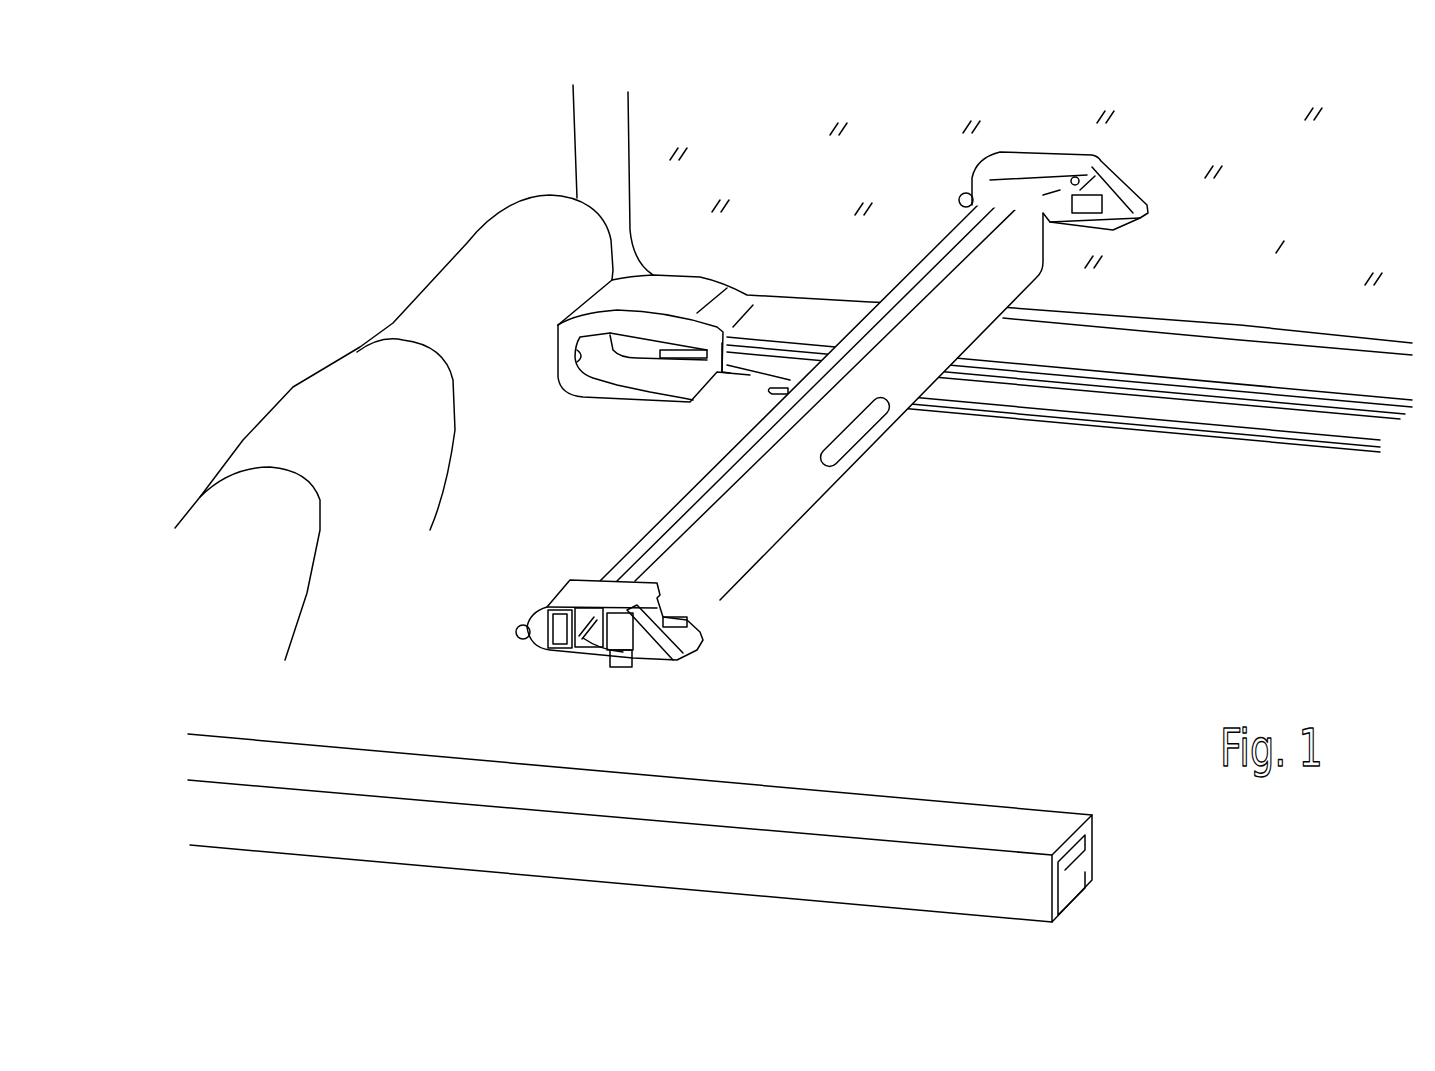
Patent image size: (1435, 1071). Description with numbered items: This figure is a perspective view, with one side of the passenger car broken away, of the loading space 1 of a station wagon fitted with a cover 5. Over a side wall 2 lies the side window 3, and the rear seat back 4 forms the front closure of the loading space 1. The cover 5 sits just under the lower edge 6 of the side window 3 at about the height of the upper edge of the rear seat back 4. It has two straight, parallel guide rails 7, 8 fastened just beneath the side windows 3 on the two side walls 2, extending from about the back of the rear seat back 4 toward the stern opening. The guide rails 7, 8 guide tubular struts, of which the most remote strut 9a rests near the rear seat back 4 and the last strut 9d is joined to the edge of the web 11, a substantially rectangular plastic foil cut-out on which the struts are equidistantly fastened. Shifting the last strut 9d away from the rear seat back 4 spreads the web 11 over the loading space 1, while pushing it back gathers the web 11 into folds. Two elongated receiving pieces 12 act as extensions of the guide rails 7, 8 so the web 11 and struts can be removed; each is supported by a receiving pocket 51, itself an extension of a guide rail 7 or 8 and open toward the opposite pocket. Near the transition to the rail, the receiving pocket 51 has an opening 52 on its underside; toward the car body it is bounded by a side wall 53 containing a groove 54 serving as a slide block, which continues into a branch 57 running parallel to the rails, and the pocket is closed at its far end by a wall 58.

The loading space 1 is at (1365, 179).
The side wall 2 is at (1178, 546).
The side window 3 is at (822, 180).
The rear seat back 4 is at (477, 263).
The cover 5 is at (908, 257).
The lower edge 6 is at (1115, 318).
The guide rail 7 is at (1305, 447).
The guide rail 8 is at (930, 820).
The tubular strut 9a is at (647, 540).
The tubular strut 9d is at (680, 552).
The web 11 is at (780, 404).
The receiving piece 12 is at (1041, 158).
The receiving pocket 51 is at (619, 391).
The opening 52 is at (750, 392).
The side wall 53 is at (722, 362).
The groove 54 is at (758, 385).
The branch 57 is at (730, 377).
The wall 58 is at (575, 370).